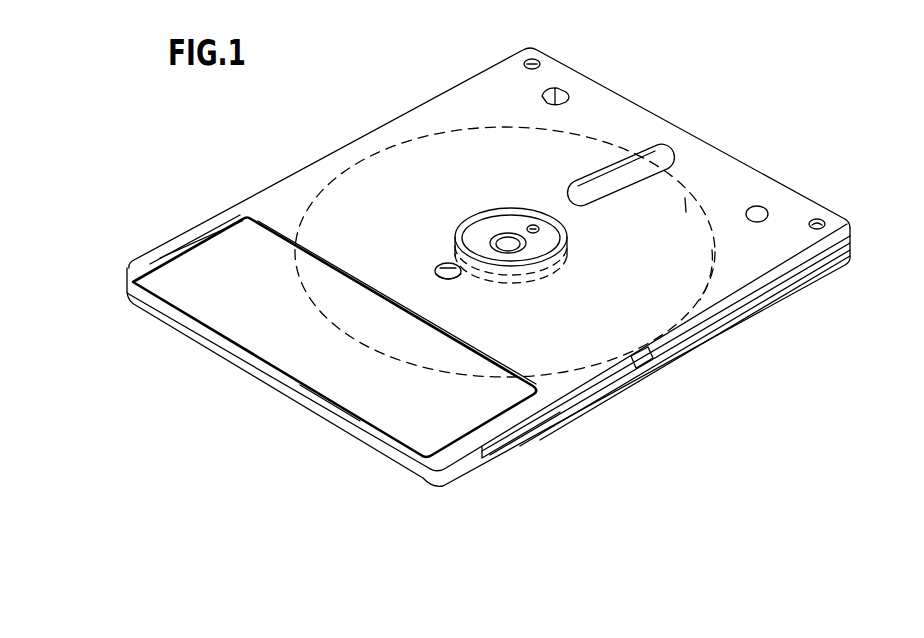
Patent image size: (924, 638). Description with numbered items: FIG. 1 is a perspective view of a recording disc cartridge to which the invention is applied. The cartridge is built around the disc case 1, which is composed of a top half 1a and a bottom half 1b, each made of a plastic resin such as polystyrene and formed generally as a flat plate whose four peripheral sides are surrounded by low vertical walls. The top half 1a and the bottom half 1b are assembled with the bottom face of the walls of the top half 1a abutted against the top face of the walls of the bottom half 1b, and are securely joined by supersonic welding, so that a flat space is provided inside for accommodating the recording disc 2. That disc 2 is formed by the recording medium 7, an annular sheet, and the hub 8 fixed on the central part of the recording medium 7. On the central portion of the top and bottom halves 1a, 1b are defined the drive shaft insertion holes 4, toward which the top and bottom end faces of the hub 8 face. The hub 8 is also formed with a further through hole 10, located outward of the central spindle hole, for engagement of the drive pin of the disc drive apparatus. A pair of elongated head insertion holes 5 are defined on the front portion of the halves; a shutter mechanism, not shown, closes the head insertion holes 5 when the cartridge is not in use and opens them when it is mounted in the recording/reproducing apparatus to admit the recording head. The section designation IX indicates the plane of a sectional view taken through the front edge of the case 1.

The disc case 1 is at (287, 172).
The top half 1a is at (849, 226).
The bottom half 1b is at (852, 263).
The recording disc 2 is at (684, 198).
The drive shaft insertion holes 4 is at (472, 218).
The head insertion holes 5 is at (590, 173).
The recording medium 7 is at (700, 256).
The hub 8 is at (510, 257).
The through hole 10 is at (533, 225).
The section line IX is at (362, 437).